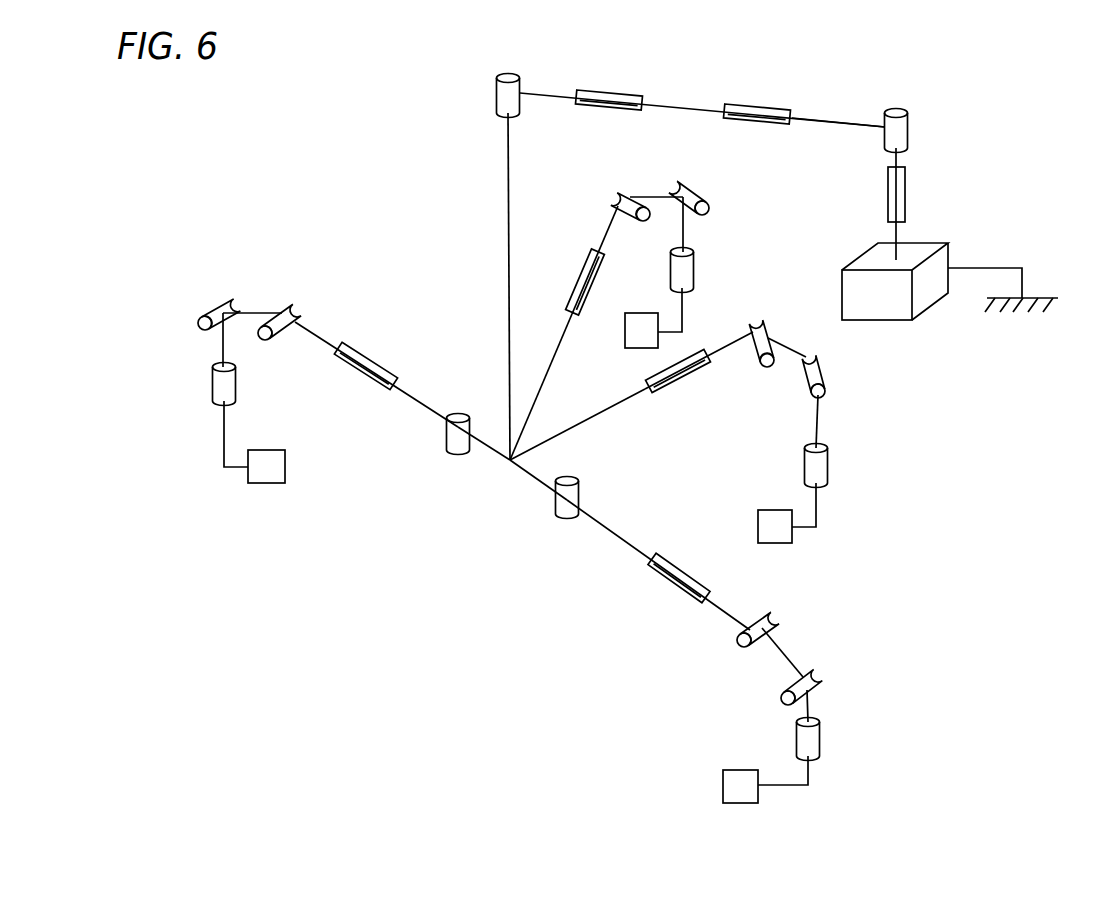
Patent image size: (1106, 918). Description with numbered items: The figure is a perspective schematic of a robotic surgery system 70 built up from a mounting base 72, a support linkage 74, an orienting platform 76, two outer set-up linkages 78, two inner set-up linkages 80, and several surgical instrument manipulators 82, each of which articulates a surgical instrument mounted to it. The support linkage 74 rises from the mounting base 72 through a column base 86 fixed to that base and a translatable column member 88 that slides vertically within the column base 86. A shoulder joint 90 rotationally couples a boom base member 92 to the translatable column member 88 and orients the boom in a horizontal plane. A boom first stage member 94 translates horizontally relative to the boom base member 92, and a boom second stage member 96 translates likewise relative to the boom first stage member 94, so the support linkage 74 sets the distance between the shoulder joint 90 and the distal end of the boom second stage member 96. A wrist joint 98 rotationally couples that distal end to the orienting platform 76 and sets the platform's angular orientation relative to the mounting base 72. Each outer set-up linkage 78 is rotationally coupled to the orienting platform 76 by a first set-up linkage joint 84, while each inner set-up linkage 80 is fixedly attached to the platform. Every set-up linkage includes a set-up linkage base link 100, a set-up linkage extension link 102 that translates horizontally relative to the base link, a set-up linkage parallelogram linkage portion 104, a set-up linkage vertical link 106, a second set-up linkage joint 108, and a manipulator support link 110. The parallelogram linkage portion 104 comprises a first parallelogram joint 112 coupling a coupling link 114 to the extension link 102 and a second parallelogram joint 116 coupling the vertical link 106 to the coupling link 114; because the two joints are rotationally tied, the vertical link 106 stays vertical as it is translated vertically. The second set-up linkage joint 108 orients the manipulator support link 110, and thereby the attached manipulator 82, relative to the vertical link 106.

The robotic surgery system 70 is at (428, 152).
The mounting base 72 is at (870, 260).
The support linkage 74 is at (1013, 133).
The orienting platform 76 is at (497, 457).
The outer set-up linkage 78 is at (305, 248).
The inner set-up linkage 80 is at (708, 195).
The surgical instrument manipulator 82 is at (625, 337).
The first set-up linkage joint 84 is at (463, 435).
The column base 86 is at (900, 235).
The translatable column member 88 is at (889, 158).
The shoulder joint 90 is at (897, 112).
The boom base member 92 is at (828, 120).
The boom first stage member 94 is at (680, 105).
The boom second stage member 96 is at (543, 92).
The wrist joint 98 is at (507, 77).
The set-up linkage base link 100 is at (562, 340).
The set-up linkage extension link 102 is at (607, 228).
The set-up linkage parallelogram linkage portion 104 is at (640, 183).
The set-up linkage vertical link 106 is at (687, 230).
The second set-up linkage joint 108 is at (695, 272).
The manipulator support link 110 is at (680, 307).
The first parallelogram joint 112 is at (738, 637).
The coupling link 114 is at (783, 658).
The second parallelogram joint 116 is at (783, 698).